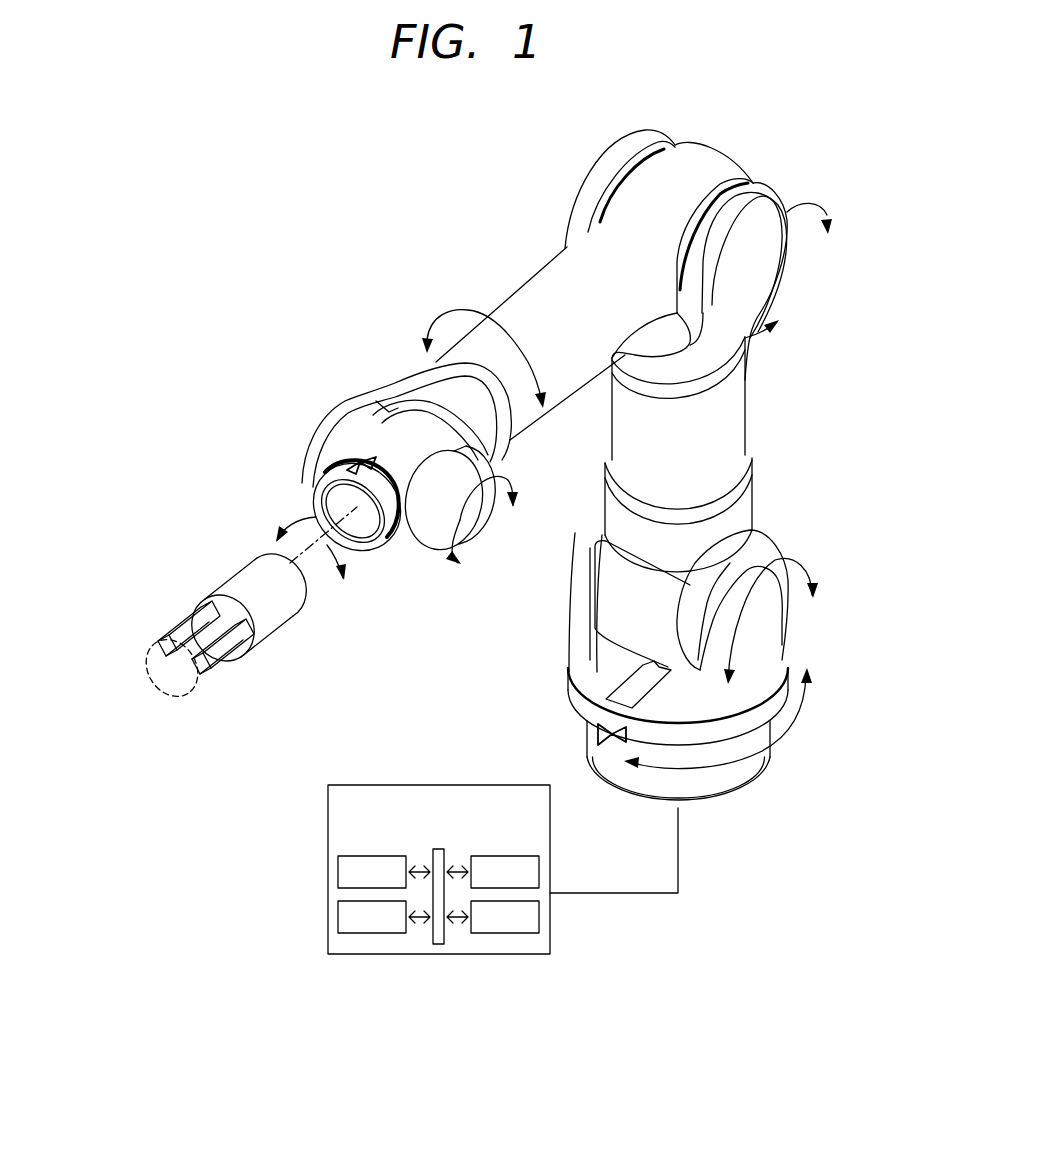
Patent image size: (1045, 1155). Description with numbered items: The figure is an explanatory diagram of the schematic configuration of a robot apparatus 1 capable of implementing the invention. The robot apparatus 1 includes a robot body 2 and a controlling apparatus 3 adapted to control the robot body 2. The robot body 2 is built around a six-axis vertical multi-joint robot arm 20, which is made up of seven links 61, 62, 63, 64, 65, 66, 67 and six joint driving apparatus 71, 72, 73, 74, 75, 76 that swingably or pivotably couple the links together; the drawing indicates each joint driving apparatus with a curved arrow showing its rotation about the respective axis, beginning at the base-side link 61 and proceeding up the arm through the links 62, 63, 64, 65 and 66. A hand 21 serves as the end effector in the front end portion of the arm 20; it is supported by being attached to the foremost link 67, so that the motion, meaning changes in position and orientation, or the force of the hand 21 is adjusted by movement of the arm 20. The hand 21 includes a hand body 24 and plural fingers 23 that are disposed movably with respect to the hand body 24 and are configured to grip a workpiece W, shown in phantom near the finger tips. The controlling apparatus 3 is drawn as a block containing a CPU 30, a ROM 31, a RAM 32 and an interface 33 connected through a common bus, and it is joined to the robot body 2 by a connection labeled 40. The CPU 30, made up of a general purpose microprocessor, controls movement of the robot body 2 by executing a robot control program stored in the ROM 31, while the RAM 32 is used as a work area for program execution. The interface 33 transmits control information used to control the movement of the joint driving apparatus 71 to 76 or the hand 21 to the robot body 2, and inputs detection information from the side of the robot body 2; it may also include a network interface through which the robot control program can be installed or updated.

The robot apparatus 1 is at (249, 292).
The robot body 2 is at (445, 703).
The controlling apparatus 3 is at (328, 812).
The arm 20 is at (526, 641).
The hand 21 is at (292, 636).
The fingers 23 is at (183, 630).
The hand body 24 is at (240, 578).
The CPU 30 is at (338, 870).
The ROM 31 is at (539, 870).
The RAM 32 is at (539, 915).
The interface 33 is at (338, 915).
The cable 40 is at (657, 893).
The link 61 is at (737, 777).
The link 62 is at (773, 653).
The link 63 is at (733, 427).
The link 64 is at (545, 290).
The link 65 is at (483, 450).
The link 66 is at (360, 433).
The foremost link 67 is at (340, 468).
The joint driving apparatus 71 is at (798, 710).
The joint driving apparatus 72 is at (740, 618).
The joint driving apparatus 73 is at (753, 267).
The joint driving apparatus 74 is at (463, 310).
The joint driving apparatus 75 is at (460, 522).
The joint driving apparatus 76 is at (347, 575).
The workpiece W is at (190, 680).